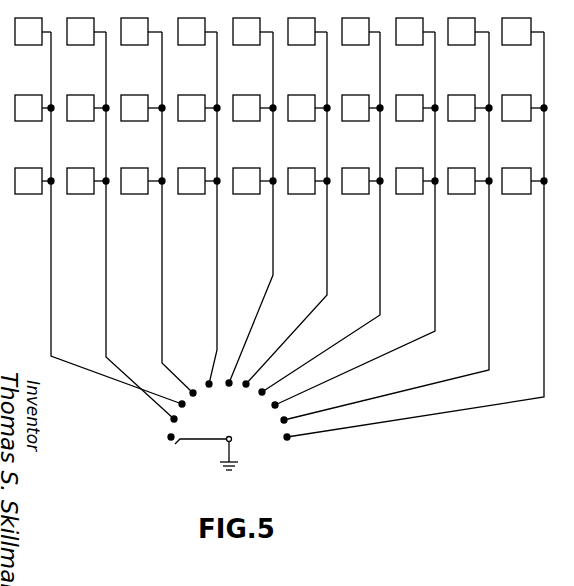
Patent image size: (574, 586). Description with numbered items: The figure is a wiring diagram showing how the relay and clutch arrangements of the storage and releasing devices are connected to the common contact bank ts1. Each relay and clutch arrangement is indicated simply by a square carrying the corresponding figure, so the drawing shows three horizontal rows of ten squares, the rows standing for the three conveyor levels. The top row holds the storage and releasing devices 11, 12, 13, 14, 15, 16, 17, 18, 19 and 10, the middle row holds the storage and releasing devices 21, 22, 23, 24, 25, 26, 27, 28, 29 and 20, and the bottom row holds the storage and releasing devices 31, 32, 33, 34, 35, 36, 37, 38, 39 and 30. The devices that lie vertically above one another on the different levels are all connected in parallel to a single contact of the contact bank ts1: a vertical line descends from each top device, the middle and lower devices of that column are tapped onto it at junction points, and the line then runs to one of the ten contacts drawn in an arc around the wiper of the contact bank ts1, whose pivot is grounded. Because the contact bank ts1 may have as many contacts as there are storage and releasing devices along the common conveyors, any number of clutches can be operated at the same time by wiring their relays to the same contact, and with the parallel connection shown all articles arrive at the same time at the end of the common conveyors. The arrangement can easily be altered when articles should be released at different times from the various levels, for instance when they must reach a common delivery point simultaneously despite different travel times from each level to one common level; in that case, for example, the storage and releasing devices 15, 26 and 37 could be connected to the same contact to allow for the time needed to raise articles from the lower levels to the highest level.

The storage and releasing device 10 is at (523, 31).
The storage and releasing device 11 is at (33, 31).
The storage and releasing device 12 is at (86, 31).
The storage and releasing device 13 is at (141, 31).
The storage and releasing device 14 is at (197, 31).
The storage and releasing device 15 is at (253, 31).
The storage and releasing device 16 is at (307, 31).
The storage and releasing device 17 is at (361, 31).
The storage and releasing device 18 is at (415, 31).
The storage and releasing device 19 is at (468, 31).
The storage and releasing device 20 is at (524, 108).
The storage and releasing device 21 is at (34, 108).
The storage and releasing device 22 is at (88, 108).
The storage and releasing device 23 is at (143, 108).
The storage and releasing device 24 is at (199, 108).
The storage and releasing device 25 is at (254, 108).
The storage and releasing device 26 is at (309, 108).
The storage and releasing device 27 is at (362, 108).
The storage and releasing device 28 is at (417, 108).
The storage and releasing device 29 is at (470, 108).
The storage and releasing device 30 is at (524, 181).
The storage and releasing device 31 is at (34, 181).
The storage and releasing device 32 is at (88, 181).
The storage and releasing device 33 is at (143, 181).
The storage and releasing device 34 is at (199, 181).
The storage and releasing device 35 is at (254, 181).
The storage and releasing device 36 is at (309, 181).
The storage and releasing device 37 is at (362, 181).
The storage and releasing device 38 is at (417, 181).
The storage and releasing device 39 is at (470, 181).
The contact bank ts1 is at (213, 449).